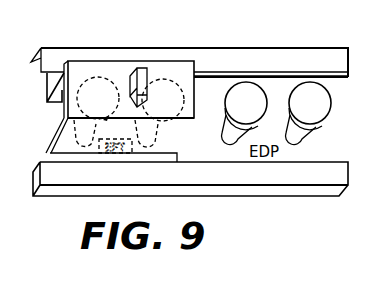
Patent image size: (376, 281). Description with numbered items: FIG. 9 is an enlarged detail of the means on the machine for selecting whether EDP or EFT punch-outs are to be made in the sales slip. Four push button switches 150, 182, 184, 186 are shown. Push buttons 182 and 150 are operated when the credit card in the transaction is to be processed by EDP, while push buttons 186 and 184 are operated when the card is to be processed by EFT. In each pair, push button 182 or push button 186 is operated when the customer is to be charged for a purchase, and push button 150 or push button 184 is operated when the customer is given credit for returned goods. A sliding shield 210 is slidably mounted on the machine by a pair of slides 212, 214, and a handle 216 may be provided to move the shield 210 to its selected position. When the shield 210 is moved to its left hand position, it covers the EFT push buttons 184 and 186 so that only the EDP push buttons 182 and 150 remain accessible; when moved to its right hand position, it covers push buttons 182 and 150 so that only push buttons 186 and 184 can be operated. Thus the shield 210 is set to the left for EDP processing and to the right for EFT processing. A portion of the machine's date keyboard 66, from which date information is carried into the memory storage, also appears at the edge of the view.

The slide 212 is at (296, 58).
The sliding shield 210 is at (112, 61).
The push button switch 186 is at (81, 63).
The push button switch 184 is at (170, 70).
The handle 216 is at (146, 68).
The push button switch 182 is at (253, 82).
The push button switch 150 is at (314, 88).
The slide 214 is at (321, 172).
The date keyboard 66 is at (373, 214).